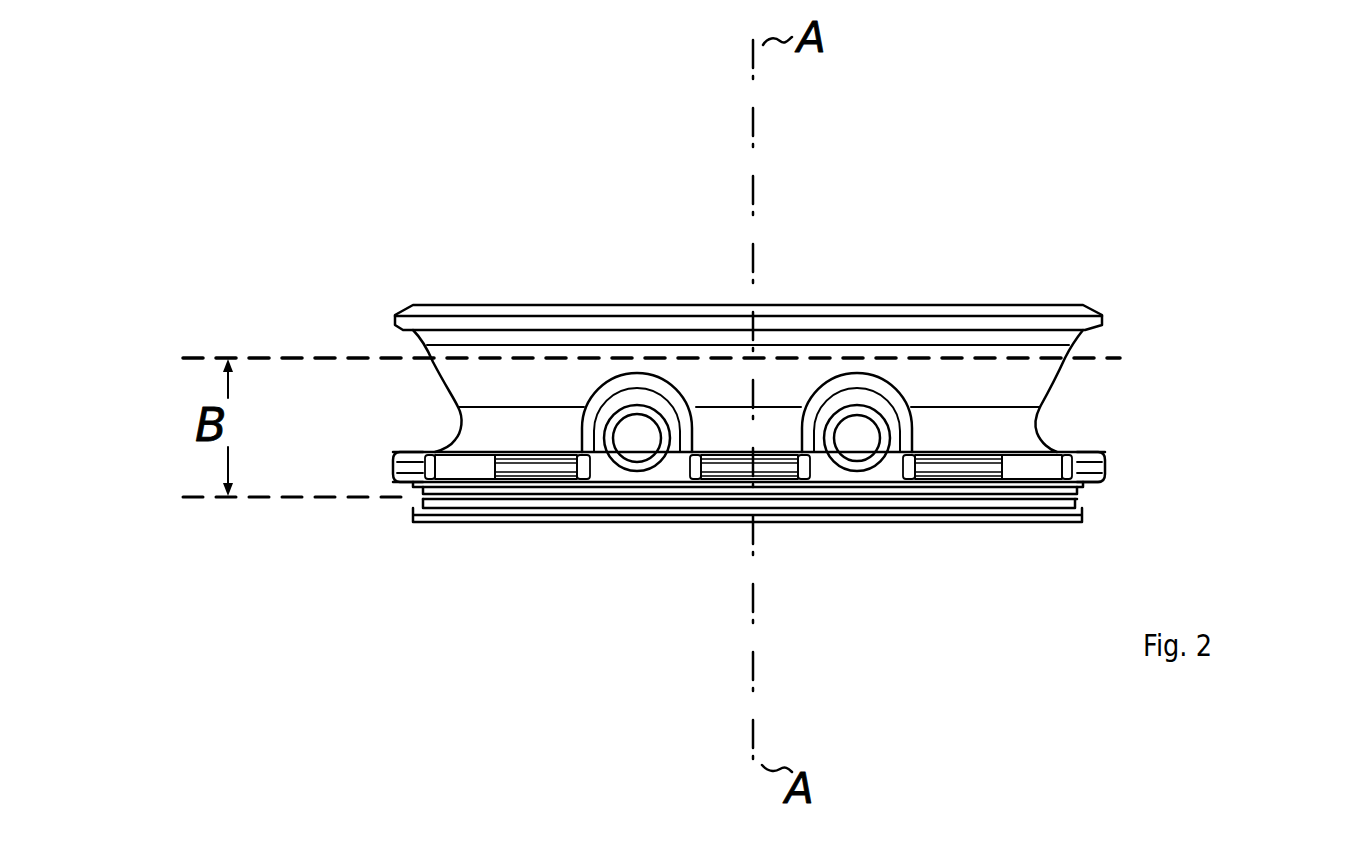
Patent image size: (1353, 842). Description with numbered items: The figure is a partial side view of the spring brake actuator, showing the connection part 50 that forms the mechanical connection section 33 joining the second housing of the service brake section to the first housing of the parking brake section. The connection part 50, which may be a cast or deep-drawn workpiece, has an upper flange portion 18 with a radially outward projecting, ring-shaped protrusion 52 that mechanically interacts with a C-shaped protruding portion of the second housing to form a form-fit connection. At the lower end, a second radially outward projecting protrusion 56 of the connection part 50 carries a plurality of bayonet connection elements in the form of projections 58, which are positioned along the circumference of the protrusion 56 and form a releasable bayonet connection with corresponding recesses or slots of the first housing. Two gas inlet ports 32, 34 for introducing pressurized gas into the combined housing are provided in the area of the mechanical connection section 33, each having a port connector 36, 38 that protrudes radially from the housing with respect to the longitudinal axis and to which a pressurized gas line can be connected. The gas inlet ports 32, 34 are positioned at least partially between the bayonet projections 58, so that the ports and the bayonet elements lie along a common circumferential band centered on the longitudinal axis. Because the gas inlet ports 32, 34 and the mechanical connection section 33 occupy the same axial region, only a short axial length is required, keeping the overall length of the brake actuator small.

The flange portion 18 is at (1068, 374).
The gas inlet port 32 is at (630, 478).
The mechanical connection section 33 is at (1217, 423).
The gas inlet port 34 is at (866, 482).
The port connector 36 is at (652, 460).
The port connector 38 is at (840, 460).
The connection part 50 is at (1024, 430).
The protrusion 52 is at (1112, 320).
The protrusion 56 is at (1132, 476).
The projections 58 is at (393, 467).